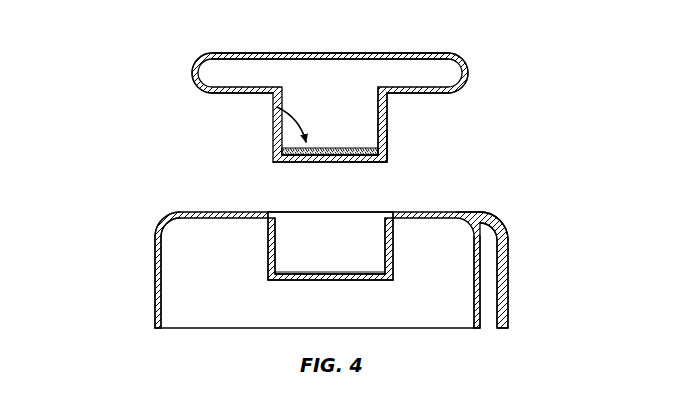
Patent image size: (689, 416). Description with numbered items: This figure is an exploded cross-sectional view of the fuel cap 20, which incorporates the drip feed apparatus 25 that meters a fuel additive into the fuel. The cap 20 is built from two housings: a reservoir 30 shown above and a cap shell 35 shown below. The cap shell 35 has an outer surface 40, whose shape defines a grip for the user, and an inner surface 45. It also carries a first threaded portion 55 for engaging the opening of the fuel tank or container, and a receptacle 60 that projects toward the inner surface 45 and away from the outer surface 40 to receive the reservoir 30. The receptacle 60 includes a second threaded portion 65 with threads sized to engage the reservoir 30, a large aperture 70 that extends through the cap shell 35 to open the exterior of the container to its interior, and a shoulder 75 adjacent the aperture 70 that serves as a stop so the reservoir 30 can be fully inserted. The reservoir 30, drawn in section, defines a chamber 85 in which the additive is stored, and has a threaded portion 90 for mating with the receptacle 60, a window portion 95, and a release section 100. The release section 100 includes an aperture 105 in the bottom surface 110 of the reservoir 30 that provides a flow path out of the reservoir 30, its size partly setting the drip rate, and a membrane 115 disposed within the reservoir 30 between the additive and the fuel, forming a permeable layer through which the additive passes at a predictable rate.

The cap 20 is at (112, 48).
The drip feed apparatus 25 is at (490, 215).
The reservoir 30 is at (412, 54).
The cap shell 35 is at (497, 218).
The outer surface 40 is at (508, 237).
The inner surface 45 is at (472, 326).
The first threaded portion 55 is at (163, 318).
The receptacle 60 is at (395, 276).
The second threaded portion 65 is at (282, 232).
The aperture 70 is at (290, 281).
The shoulder 75 is at (372, 278).
The chamber 85 is at (270, 70).
The threaded portion 90 is at (388, 128).
The window portion 95 is at (330, 55).
The release section 100 is at (275, 105).
The aperture 105 is at (328, 163).
The bottom surface 110 is at (378, 163).
The membrane 115 is at (273, 130).